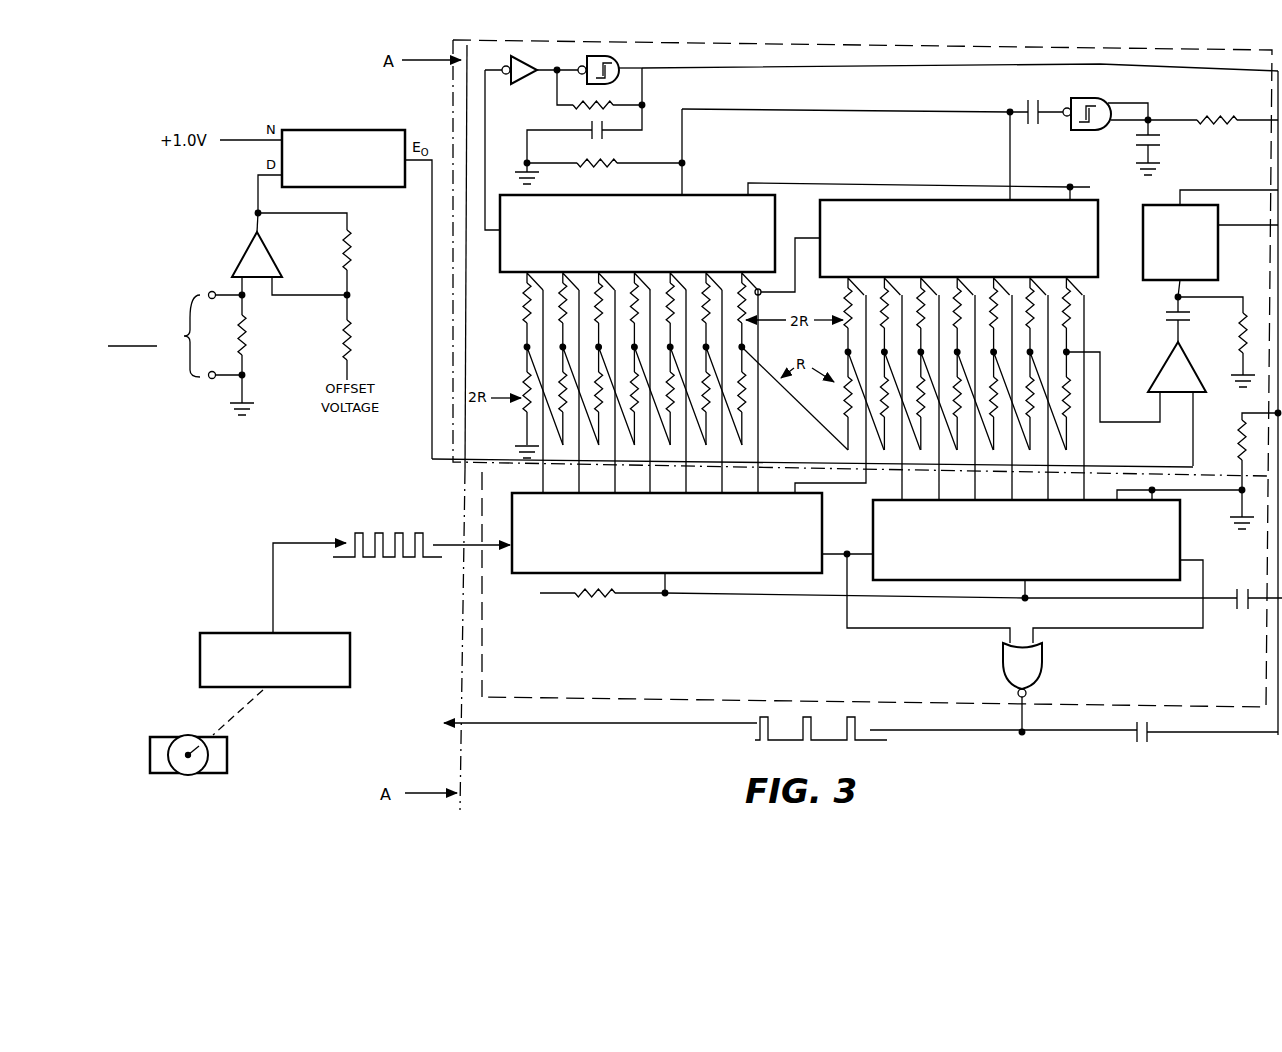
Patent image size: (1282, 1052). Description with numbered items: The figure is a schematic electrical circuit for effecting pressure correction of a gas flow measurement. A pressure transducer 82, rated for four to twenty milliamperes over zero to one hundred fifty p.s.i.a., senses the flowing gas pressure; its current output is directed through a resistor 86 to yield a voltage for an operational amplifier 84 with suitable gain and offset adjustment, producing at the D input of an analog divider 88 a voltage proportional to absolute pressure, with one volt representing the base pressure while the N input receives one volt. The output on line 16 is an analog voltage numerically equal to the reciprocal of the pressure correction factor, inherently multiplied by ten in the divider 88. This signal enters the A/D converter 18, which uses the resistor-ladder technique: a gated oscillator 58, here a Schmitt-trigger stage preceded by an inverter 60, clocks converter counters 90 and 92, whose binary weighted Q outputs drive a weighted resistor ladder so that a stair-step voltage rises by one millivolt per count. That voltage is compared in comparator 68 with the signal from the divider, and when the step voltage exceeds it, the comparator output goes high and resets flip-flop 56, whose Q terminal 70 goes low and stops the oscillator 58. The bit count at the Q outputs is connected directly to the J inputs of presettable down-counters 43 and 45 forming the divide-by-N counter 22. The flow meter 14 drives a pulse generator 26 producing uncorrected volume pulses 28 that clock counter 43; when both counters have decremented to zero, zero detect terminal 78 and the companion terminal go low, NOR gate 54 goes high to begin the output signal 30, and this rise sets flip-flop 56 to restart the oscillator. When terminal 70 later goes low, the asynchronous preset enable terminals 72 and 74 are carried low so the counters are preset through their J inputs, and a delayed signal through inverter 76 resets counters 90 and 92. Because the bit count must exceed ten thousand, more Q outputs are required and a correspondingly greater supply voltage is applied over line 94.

The flow meter 14 is at (232, 758).
The analog voltage signal 16 is at (432, 227).
The A/D converter 18 is at (450, 110).
The divide-by-N counter 22 is at (1057, 706).
The pulse generator 26 is at (237, 630).
The pulses 28 is at (454, 552).
The digital output signal 30 is at (455, 723).
The presettable counter 43 is at (699, 558).
The presettable counter 45 is at (1100, 556).
The NOR gate 54 is at (1003, 663).
The flip-flop 56 is at (1153, 213).
The gated oscillator 58 is at (633, 69).
The inverter 60 is at (514, 60).
The voltage comparator 68 is at (1176, 356).
The Q terminal 70 is at (1263, 225).
The asynchronous preset enable terminal 72 is at (662, 584).
The asynchronous preset enable terminal 74 is at (1018, 588).
The inverter 76 is at (1072, 100).
The zero detect terminal 78 is at (835, 553).
The pressure transducer 82 is at (216, 350).
The operational amplifier 84 is at (252, 250).
The resistor 86 is at (248, 344).
The analog divider 88 is at (343, 128).
The converter counter 90 is at (705, 207).
The converter counter 92 is at (840, 218).
The voltage source line 94 is at (845, 186).